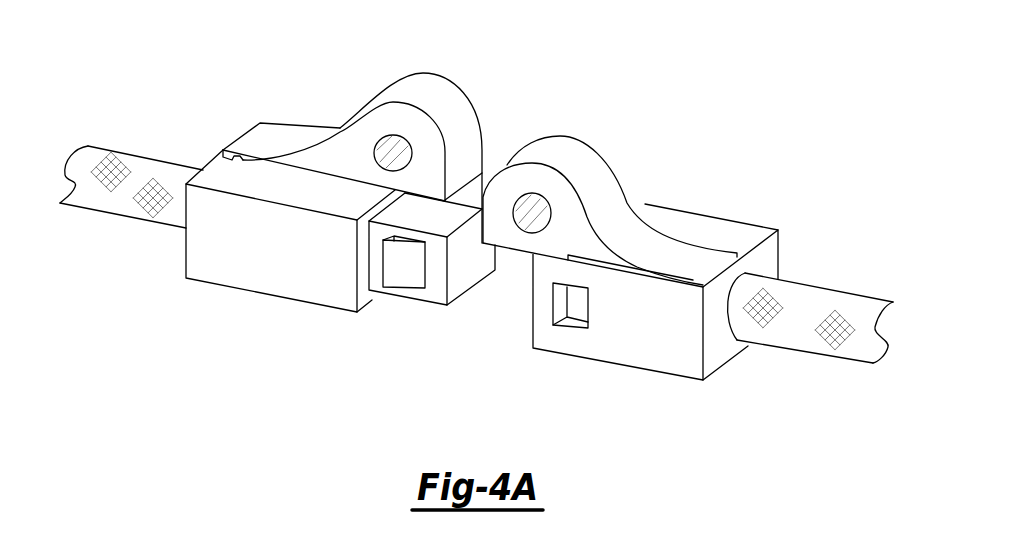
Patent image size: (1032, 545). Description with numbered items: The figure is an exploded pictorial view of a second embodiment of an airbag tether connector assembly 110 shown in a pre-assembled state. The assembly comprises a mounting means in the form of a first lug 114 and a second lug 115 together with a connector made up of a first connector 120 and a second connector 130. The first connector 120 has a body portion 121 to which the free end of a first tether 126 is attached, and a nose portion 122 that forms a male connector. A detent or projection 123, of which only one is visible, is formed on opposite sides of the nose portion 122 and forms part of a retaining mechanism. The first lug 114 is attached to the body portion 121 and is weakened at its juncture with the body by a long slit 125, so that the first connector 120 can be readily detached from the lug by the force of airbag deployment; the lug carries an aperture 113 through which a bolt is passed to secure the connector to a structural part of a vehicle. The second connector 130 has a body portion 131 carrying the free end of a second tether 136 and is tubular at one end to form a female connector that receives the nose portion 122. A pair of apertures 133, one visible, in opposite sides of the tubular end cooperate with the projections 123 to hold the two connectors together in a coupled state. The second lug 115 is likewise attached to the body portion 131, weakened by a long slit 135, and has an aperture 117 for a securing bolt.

The airbag tether connector assembly 110 is at (148, 68).
The aperture 113 is at (382, 133).
The first lug 114 is at (307, 130).
The second lug 115 is at (583, 138).
The aperture 117 is at (522, 193).
The first connector 120 is at (206, 283).
The body portion 121 is at (278, 280).
The nose portion 122 is at (442, 303).
The projection 123 is at (410, 273).
The slit 125 is at (242, 160).
The first tether 126 is at (123, 220).
The second connector 130 is at (683, 383).
The body portion 131 is at (643, 343).
The aperture 133 is at (573, 327).
The slit 135 is at (673, 278).
The second tether 136 is at (813, 352).